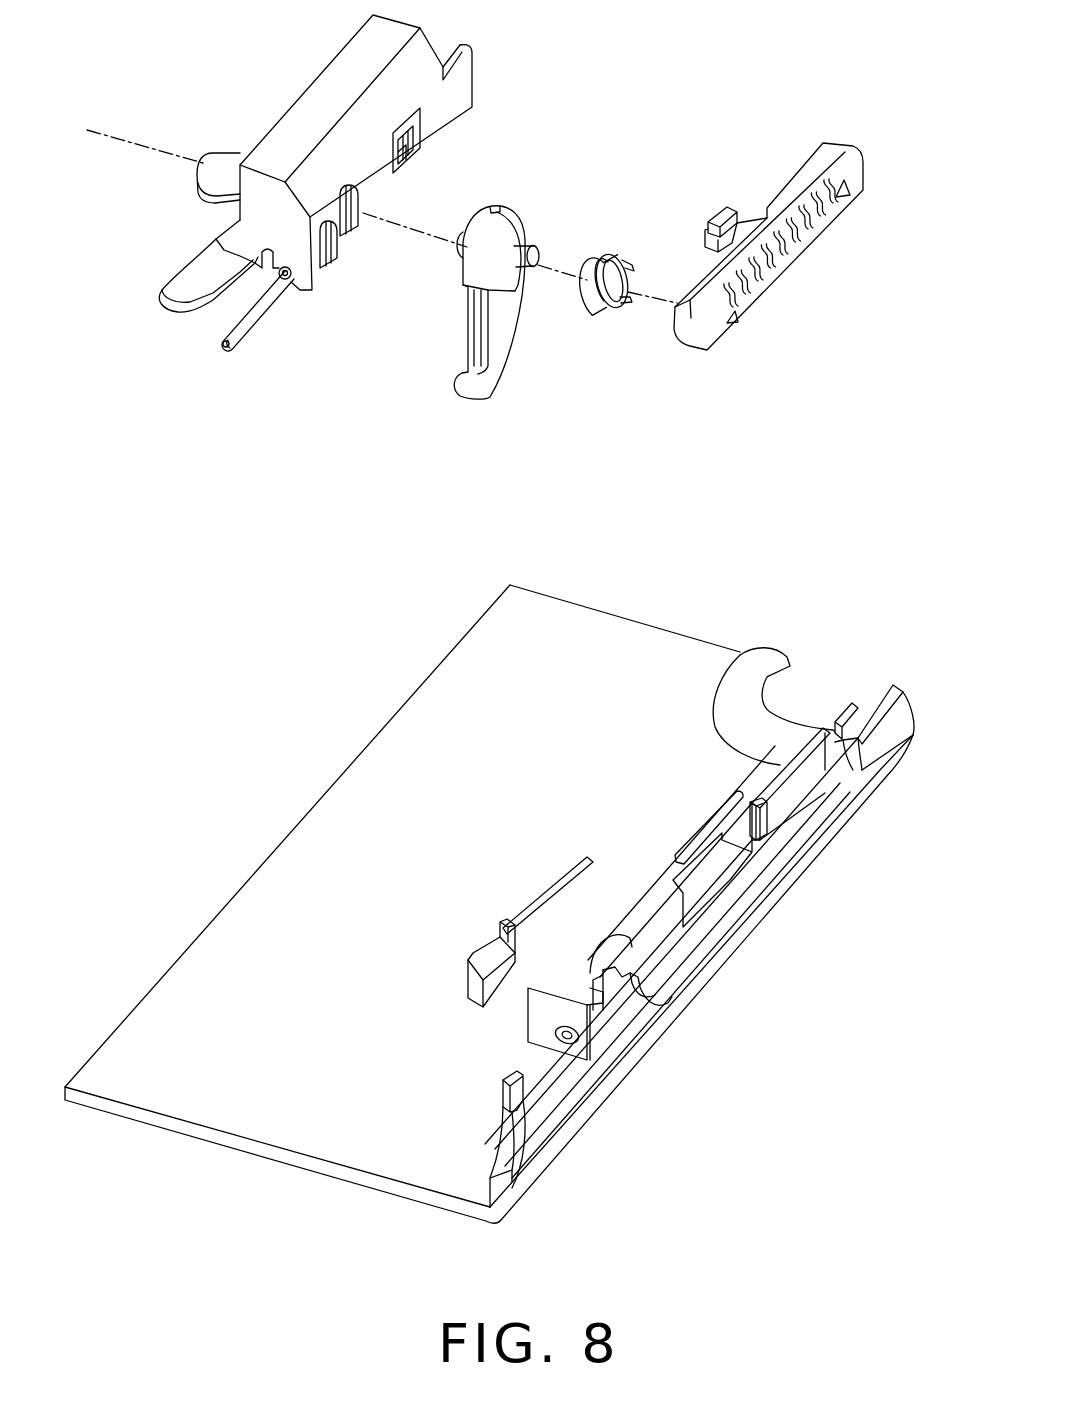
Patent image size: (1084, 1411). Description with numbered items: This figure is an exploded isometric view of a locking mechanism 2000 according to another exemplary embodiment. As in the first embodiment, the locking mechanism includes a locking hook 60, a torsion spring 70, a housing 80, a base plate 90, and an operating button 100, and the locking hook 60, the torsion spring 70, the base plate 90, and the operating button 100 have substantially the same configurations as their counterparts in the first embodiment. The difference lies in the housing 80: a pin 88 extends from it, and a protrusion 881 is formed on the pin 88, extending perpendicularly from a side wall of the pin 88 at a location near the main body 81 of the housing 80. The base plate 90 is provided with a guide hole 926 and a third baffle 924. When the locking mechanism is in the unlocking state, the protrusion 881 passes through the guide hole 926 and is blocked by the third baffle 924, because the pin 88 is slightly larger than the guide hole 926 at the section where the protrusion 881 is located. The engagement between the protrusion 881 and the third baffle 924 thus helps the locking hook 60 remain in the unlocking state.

The electrical connector assembly 2000 is at (656, 128).
The housing 80 is at (156, 305).
The main body 81 is at (267, 213).
The pin 88 is at (247, 322).
The protrusion 881 is at (287, 280).
The locking hook 60 is at (468, 406).
The torsion spring 70 is at (597, 330).
The operating button 100 is at (818, 269).
The base plate 90 is at (277, 804).
The third baffle 924 is at (540, 1022).
The guide hole 926 is at (572, 1040).